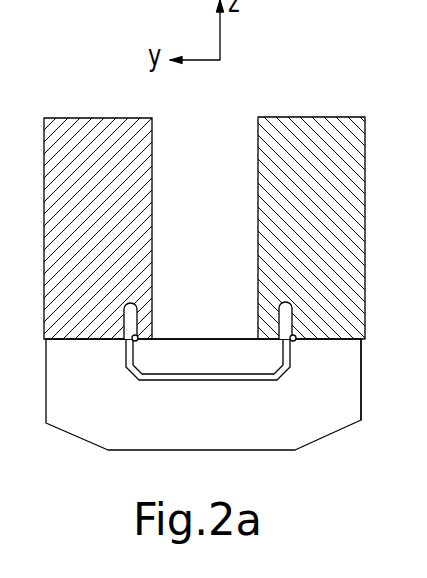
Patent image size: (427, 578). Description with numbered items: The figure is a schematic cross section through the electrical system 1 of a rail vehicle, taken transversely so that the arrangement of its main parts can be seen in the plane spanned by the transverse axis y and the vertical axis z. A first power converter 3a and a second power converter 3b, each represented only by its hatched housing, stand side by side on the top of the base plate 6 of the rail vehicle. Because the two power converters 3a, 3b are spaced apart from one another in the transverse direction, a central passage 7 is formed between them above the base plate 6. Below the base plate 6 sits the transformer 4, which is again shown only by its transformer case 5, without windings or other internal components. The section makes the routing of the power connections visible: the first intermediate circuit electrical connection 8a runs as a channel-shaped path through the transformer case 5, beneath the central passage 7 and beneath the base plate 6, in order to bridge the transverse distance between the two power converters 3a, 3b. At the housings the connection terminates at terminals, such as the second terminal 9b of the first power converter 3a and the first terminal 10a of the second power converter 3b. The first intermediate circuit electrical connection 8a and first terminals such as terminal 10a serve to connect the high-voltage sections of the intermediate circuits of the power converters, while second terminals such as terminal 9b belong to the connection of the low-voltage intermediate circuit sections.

The electrical system 1 is at (72, 462).
The first power converter 3a is at (88, 118).
The second power converter 3b is at (313, 118).
The transformer 4 is at (328, 420).
The transformer case 5 is at (363, 402).
The base plate 6 is at (225, 338).
The central passage 7 is at (210, 155).
The first intermediate circuit electrical connection 8a is at (248, 381).
The second terminal of the first power converter 9b is at (136, 336).
The first terminal of the second power converter 10a is at (294, 341).